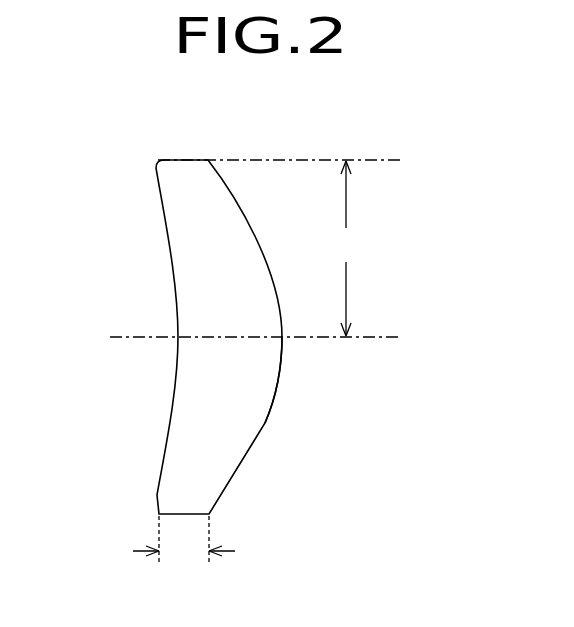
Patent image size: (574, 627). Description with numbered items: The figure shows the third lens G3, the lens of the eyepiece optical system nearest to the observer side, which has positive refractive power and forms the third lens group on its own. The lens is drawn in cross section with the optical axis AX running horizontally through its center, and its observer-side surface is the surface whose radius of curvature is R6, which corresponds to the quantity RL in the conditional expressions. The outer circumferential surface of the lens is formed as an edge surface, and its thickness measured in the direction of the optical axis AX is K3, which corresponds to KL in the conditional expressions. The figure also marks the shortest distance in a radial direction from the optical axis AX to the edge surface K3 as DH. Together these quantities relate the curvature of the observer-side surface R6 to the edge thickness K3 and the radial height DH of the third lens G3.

The third lens G3 is at (185, 159).
The radius of curvature of observer-side surface R6 is at (265, 423).
The optical axis AX is at (274, 338).
The shortest radial distance to edge surface DH is at (279, 248).
The edge surface thickness K3 is at (184, 559).